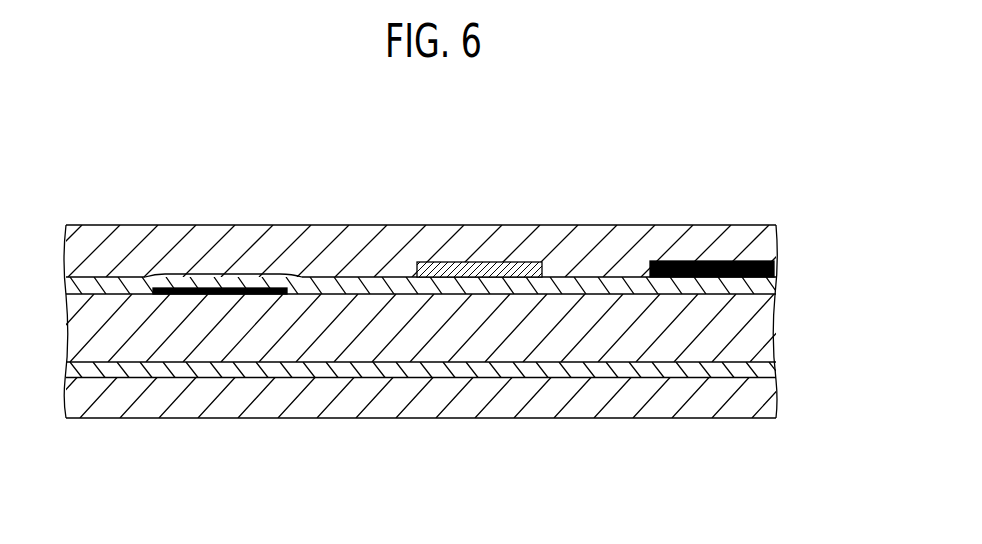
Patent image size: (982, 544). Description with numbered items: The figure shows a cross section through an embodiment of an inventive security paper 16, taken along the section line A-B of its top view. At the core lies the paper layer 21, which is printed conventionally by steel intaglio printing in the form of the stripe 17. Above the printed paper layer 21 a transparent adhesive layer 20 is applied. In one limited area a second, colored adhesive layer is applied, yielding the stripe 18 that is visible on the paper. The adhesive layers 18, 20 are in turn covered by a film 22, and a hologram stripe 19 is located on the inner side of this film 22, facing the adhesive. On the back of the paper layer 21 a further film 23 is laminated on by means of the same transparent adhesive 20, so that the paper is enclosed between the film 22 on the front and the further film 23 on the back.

The security paper 16 is at (802, 186).
The stripe 17 is at (218, 284).
The colored adhesive layer stripe 18 is at (479, 260).
The hologram stripe 19 is at (707, 260).
The transparent adhesive layer 20 is at (762, 286).
The paper layer 21 is at (743, 326).
The film 22 is at (762, 243).
The further film 23 is at (707, 402).